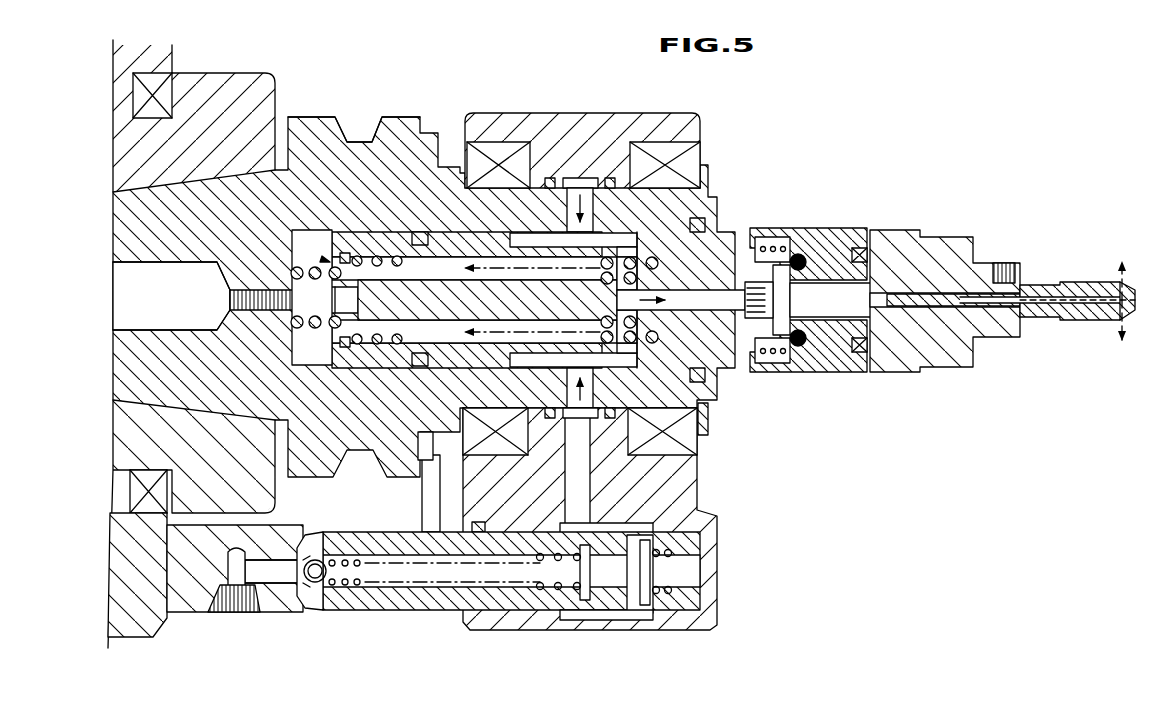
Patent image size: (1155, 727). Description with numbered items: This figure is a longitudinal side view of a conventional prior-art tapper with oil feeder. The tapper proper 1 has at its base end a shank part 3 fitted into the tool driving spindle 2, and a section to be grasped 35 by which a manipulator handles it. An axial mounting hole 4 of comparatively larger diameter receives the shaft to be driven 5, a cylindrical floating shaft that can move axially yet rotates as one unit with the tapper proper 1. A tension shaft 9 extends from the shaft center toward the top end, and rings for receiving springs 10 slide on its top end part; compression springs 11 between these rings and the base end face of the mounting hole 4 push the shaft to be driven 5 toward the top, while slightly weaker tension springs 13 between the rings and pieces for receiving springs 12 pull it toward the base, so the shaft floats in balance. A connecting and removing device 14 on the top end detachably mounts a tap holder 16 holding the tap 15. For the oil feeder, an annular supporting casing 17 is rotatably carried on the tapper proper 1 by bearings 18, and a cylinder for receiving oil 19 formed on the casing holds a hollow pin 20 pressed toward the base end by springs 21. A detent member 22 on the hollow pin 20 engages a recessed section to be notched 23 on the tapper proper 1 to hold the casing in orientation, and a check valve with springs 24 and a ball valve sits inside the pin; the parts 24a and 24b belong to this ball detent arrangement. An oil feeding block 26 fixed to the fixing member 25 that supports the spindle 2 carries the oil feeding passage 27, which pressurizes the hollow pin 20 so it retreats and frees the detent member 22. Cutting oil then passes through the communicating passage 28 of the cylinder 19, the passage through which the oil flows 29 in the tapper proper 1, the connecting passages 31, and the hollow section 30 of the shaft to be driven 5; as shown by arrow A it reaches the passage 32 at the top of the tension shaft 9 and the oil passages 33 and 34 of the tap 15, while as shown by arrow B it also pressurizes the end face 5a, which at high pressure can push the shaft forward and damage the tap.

The tapper proper 1 is at (665, 217).
The tool driving spindle 2 is at (262, 95).
The shank part 3 is at (243, 183).
The mounting hole 4 is at (462, 256).
The shaft to be driven 5 is at (462, 350).
The end face 5a is at (335, 247).
The tension shaft 9 is at (515, 312).
The rings for receiving springs 10 is at (718, 335).
The compression springs 11 is at (336, 332).
The pieces for receiving springs 12 is at (350, 342).
The tension springs 13 is at (379, 343).
The connecting and removing device 14 is at (803, 232).
The tap 15 is at (1080, 292).
The tap holder 16 is at (942, 240).
The supporting casing 17 is at (526, 132).
The bearings 18 is at (648, 147).
The cylinder for receiving oil 19 is at (672, 508).
The hollow pin 20 is at (418, 602).
The springs 21 is at (665, 612).
The detent member 22 is at (428, 495).
The recessed section to be notched 23 is at (402, 480).
The springs 24 is at (313, 552).
The spring 24a is at (357, 590).
The ball seat 24b is at (322, 595).
The fixing member 25 is at (166, 612).
The oil feeding block 26 is at (188, 598).
The oil feeding passage 27 is at (239, 577).
The communicating passage 28 is at (640, 470).
The passage through which the oil flows 29 is at (586, 392).
The hollow section 30 is at (428, 275).
The connecting passages 31 is at (632, 358).
The passage 32 is at (765, 296).
The oil passage 33 is at (862, 296).
The oil passage 34 is at (1097, 305).
The section to be grasped 35 is at (347, 133).
The arrow A is at (730, 298).
The arrow B is at (600, 272).